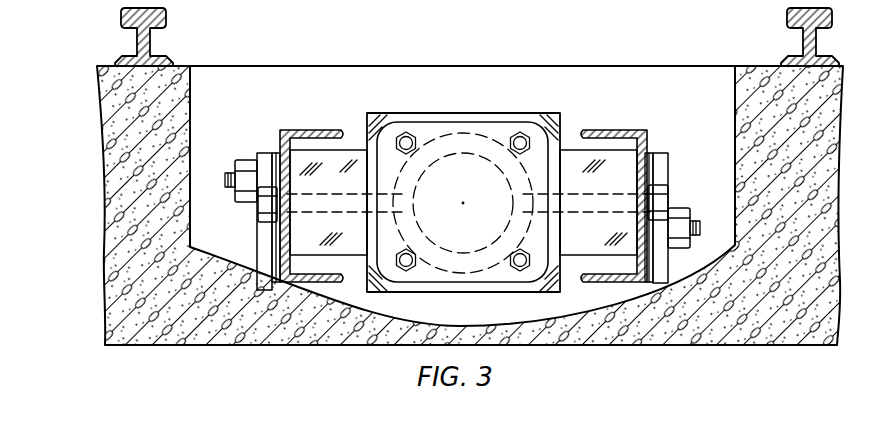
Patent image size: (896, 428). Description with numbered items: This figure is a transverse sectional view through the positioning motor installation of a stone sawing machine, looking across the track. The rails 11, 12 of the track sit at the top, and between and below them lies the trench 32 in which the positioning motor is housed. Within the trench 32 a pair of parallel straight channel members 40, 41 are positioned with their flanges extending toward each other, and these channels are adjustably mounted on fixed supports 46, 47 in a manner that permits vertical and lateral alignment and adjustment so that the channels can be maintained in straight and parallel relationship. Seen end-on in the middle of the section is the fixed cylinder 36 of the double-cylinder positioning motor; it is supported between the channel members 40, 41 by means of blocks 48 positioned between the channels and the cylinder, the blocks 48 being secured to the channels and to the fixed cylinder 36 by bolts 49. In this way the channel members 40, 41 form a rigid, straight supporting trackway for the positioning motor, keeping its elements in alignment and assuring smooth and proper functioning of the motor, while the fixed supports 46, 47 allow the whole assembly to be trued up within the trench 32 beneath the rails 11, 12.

The rail 11 is at (124, 15).
The rail 12 is at (830, 14).
The trench 32 is at (680, 120).
The fixed cylinder 36 is at (491, 128).
The channel member 40 is at (293, 130).
The channel member 41 is at (646, 130).
The fixed support 46 is at (262, 239).
The fixed support 47 is at (658, 278).
The block 48 is at (343, 170).
The bolt 49 is at (245, 197).